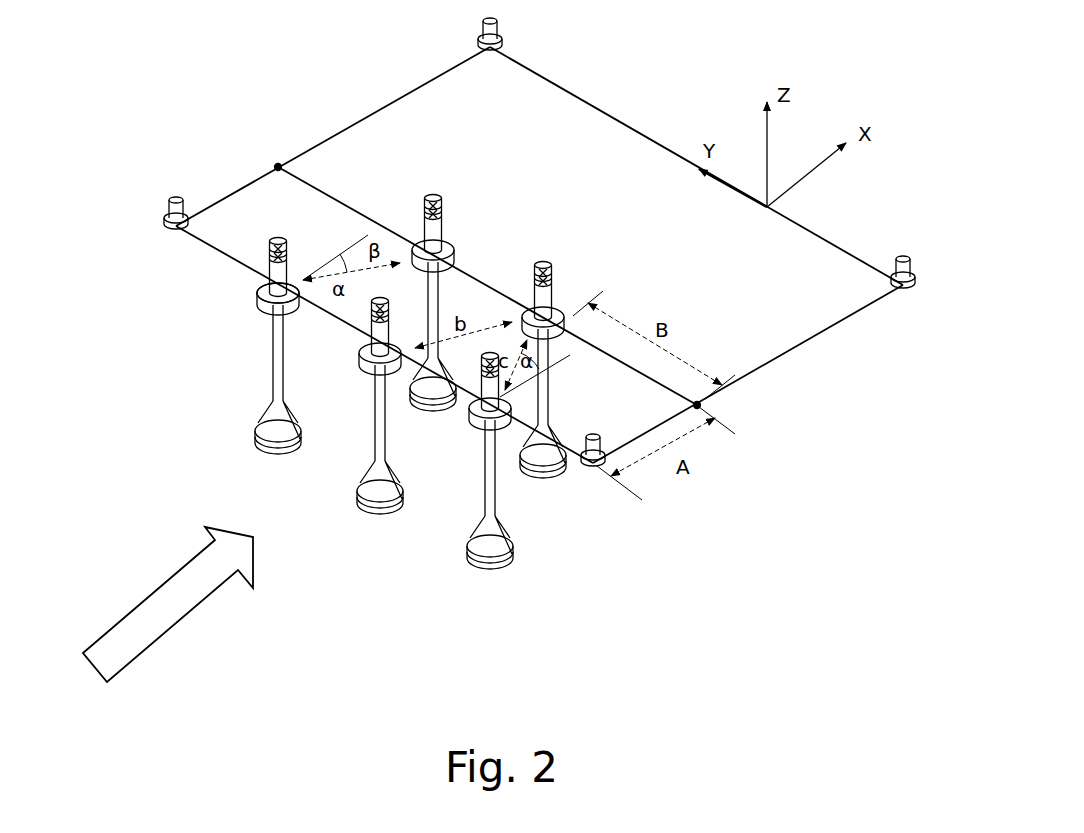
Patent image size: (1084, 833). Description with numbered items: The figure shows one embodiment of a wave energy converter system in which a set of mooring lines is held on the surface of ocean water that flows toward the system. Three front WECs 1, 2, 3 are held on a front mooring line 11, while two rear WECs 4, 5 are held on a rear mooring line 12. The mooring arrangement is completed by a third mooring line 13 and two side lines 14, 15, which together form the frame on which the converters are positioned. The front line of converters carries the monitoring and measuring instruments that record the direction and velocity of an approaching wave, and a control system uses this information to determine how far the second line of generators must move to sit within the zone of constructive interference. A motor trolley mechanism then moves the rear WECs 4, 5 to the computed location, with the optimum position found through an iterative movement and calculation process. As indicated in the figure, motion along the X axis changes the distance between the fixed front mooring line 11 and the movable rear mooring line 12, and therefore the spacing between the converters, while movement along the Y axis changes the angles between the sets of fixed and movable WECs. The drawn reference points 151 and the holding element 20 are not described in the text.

The front WEC 1 is at (248, 436).
The front WEC 2 is at (357, 500).
The front WEC 3 is at (467, 556).
The rear WEC 4 is at (443, 215).
The rear WEC 5 is at (552, 290).
The front mooring line 11 is at (197, 243).
The rear mooring line 12 is at (338, 201).
The third mooring line 13 is at (822, 238).
The side line 14 is at (418, 88).
The side line 15 is at (823, 331).
The connection node 151 is at (278, 167).
The valve holder 20 is at (262, 264).